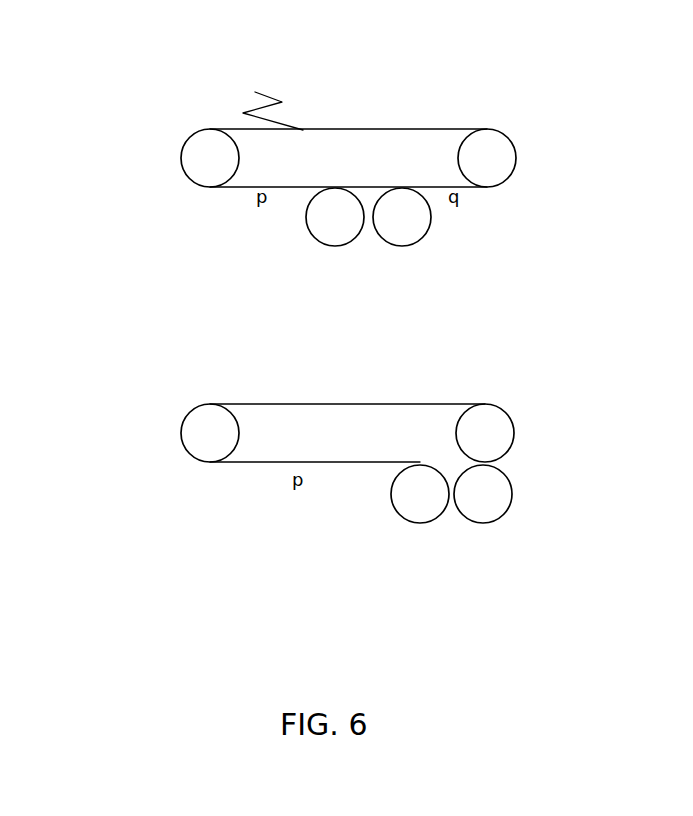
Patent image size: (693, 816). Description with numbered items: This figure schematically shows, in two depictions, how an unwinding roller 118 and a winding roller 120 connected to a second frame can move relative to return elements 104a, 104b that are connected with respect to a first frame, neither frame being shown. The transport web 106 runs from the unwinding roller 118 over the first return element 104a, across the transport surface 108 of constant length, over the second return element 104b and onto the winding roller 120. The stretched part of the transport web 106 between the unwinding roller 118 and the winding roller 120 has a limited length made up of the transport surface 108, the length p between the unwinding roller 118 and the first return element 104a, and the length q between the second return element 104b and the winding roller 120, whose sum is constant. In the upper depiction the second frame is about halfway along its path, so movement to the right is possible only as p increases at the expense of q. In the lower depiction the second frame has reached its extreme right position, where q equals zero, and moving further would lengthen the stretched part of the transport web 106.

The first return element 104a is at (198, 157).
The second return element 104b is at (500, 157).
The transport web 106 is at (462, 188).
The transport surface 108 is at (266, 100).
The unwinding roller 118 is at (333, 217).
The winding roller 120 is at (408, 217).